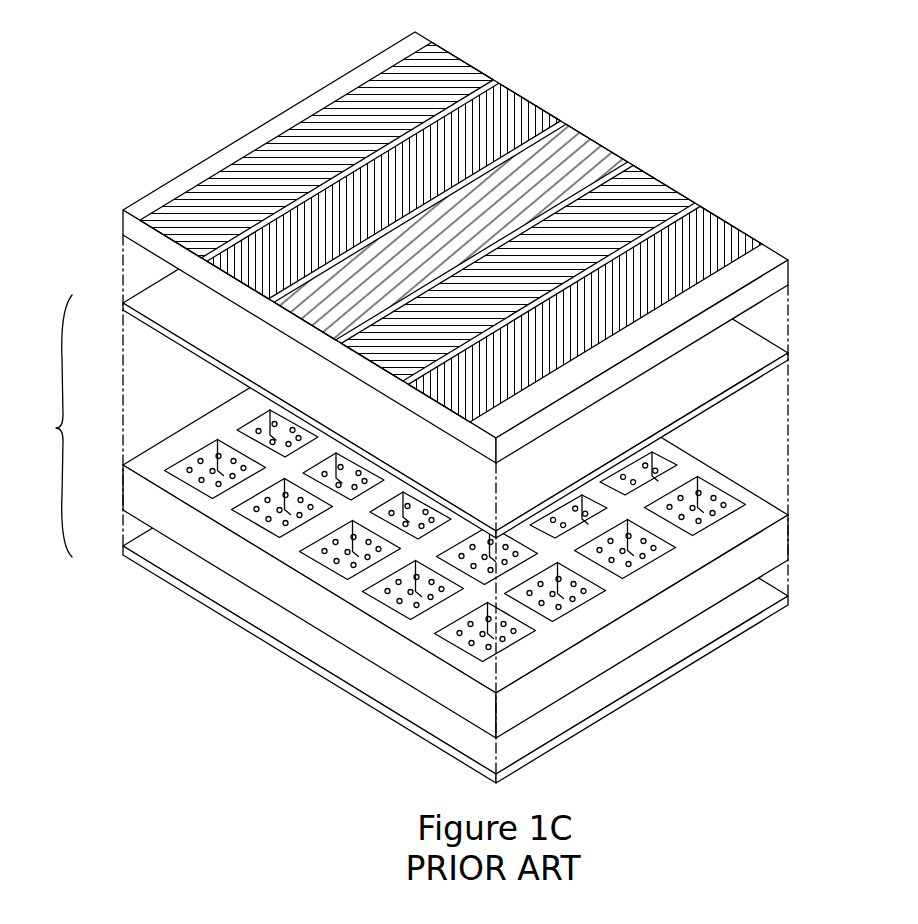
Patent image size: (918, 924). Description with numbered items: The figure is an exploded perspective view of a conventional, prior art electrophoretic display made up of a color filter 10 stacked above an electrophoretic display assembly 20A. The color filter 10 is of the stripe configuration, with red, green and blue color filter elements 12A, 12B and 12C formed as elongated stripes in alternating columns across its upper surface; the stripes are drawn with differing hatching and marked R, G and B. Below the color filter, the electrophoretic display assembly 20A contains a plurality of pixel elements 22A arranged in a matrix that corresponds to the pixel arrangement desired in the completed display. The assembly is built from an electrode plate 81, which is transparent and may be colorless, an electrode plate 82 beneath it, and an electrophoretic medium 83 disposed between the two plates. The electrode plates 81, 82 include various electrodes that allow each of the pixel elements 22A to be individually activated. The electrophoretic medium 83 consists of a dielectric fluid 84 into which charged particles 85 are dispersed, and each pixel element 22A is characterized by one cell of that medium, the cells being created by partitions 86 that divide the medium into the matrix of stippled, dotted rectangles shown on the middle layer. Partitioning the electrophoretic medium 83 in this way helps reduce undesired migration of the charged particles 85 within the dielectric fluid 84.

The color filter 10 is at (468, 237).
The red color filter element 12A is at (437, 75).
The green color filter element 12B is at (505, 118).
The blue color filter element 12C is at (577, 157).
The electrophoretic display assembly 20A is at (41, 426).
The pixel elements 22A is at (404, 517).
The electrode plate 81 is at (168, 307).
The electrode plate 82 is at (168, 557).
The electrophoretic medium 83 is at (170, 429).
The dielectric fluid 84 is at (203, 490).
The charged particles 85 is at (170, 445).
The partitions 86 is at (440, 617).